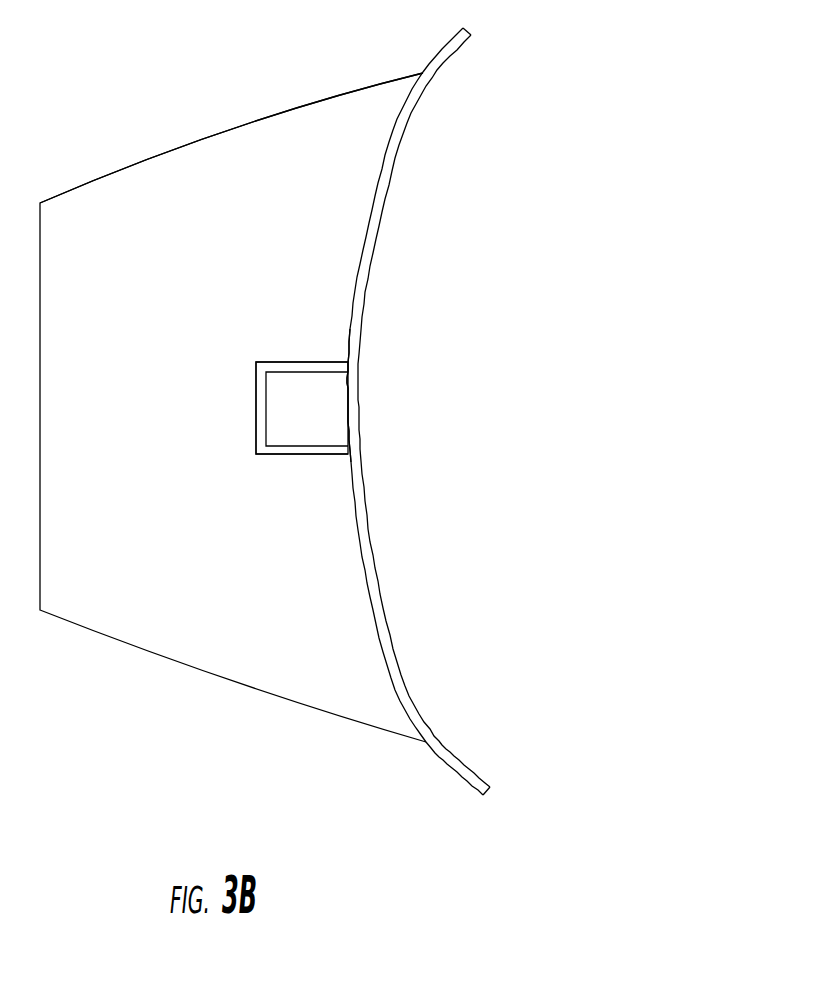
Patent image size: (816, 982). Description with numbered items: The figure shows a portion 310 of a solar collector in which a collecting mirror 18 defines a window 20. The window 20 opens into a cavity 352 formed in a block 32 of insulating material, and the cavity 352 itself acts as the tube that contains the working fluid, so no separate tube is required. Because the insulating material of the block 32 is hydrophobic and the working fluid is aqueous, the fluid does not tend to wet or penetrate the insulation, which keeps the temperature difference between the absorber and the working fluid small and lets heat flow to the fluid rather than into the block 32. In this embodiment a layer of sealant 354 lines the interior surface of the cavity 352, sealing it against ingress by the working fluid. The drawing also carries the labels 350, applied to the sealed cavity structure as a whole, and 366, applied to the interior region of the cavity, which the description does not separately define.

The collecting mirror 18 is at (433, 82).
The window 20 is at (352, 402).
The block of insulating material 32 is at (245, 147).
The portion of a solar collector 310 is at (185, 741).
The sensor assembly 350 is at (300, 456).
The cavity 352 is at (280, 432).
The layer of sealant 354 is at (256, 384).
The sensing region / window 366 is at (287, 424).